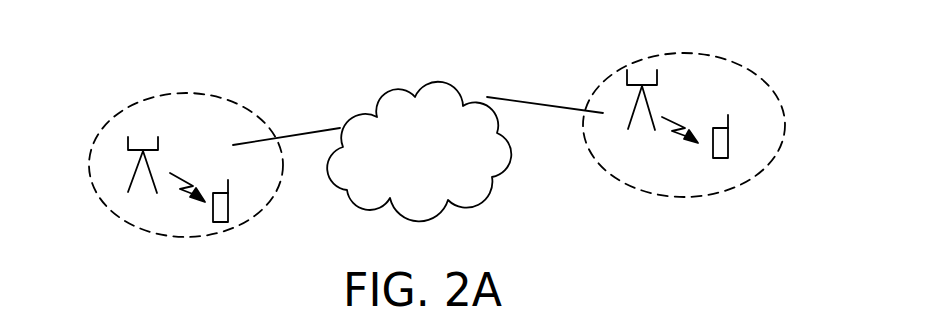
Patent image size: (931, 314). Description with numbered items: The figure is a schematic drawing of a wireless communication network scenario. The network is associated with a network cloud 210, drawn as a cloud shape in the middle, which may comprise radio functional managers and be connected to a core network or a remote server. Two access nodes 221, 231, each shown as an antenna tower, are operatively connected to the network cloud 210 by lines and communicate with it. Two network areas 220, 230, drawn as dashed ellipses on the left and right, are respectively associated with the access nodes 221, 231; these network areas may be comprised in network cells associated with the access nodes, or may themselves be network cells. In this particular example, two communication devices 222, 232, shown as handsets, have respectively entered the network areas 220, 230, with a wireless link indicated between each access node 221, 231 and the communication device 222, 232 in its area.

The network cloud 210 is at (395, 82).
The network area 220 is at (223, 97).
The access node 221 is at (152, 180).
The communication device 222 is at (230, 197).
The network area 230 is at (717, 53).
The access node 231 is at (647, 110).
The communication device 232 is at (728, 158).